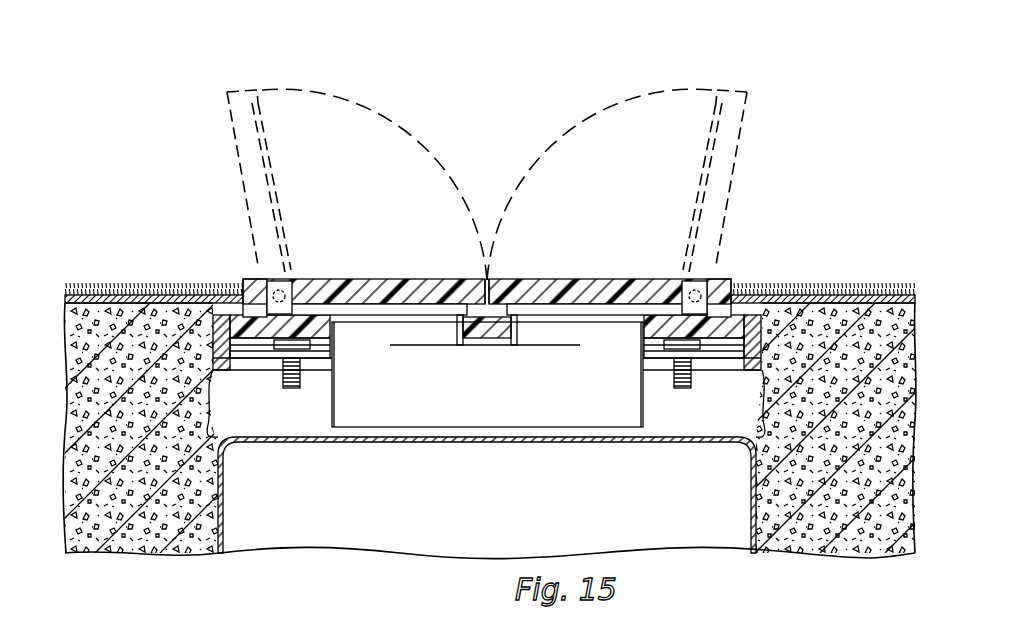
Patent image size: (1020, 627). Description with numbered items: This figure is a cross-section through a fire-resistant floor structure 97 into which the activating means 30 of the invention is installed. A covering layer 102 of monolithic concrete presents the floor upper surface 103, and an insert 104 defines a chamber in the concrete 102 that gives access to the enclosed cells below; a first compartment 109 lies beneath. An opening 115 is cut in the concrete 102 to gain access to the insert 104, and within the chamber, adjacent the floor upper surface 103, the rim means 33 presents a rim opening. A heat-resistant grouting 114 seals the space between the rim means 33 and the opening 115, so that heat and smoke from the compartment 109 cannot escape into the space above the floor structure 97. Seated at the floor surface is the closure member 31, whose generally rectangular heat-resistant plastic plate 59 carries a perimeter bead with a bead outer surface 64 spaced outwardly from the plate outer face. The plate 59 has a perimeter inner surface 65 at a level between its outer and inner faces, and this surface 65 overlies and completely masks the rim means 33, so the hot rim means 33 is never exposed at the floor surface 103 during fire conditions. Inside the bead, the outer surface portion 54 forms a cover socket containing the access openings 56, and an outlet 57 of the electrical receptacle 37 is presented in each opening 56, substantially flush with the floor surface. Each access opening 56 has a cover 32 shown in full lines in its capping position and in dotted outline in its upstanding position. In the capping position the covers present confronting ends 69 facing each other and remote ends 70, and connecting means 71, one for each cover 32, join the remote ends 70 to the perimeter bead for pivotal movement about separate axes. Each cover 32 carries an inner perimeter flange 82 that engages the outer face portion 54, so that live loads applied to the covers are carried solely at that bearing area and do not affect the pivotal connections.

The activating means 30 is at (207, 187).
The closure member 31 is at (243, 290).
The cover 32 is at (390, 300).
The rim means 33 is at (753, 375).
The electrical receptacle 37 is at (503, 430).
The outer surface portion 54 is at (445, 304).
The access opening 56 is at (333, 322).
The outlet 57 is at (382, 304).
The plate 59 is at (475, 325).
The bead outer surface 64 is at (733, 292).
The perimeter inner surface 65 is at (790, 320).
The confronting ends 69 is at (489, 304).
The remote ends 70 is at (262, 275).
The connecting means 71 is at (297, 268).
The inner perimeter flange 82 is at (462, 322).
The floor structure 97 is at (794, 127).
The covering layer of monolithic concrete 102 is at (120, 558).
The floor upper surface 103 is at (107, 296).
The insert 104 is at (744, 512).
The first compartment 109 is at (352, 548).
The heat-resistant grouting 114 is at (212, 360).
The opening 115 is at (215, 430).